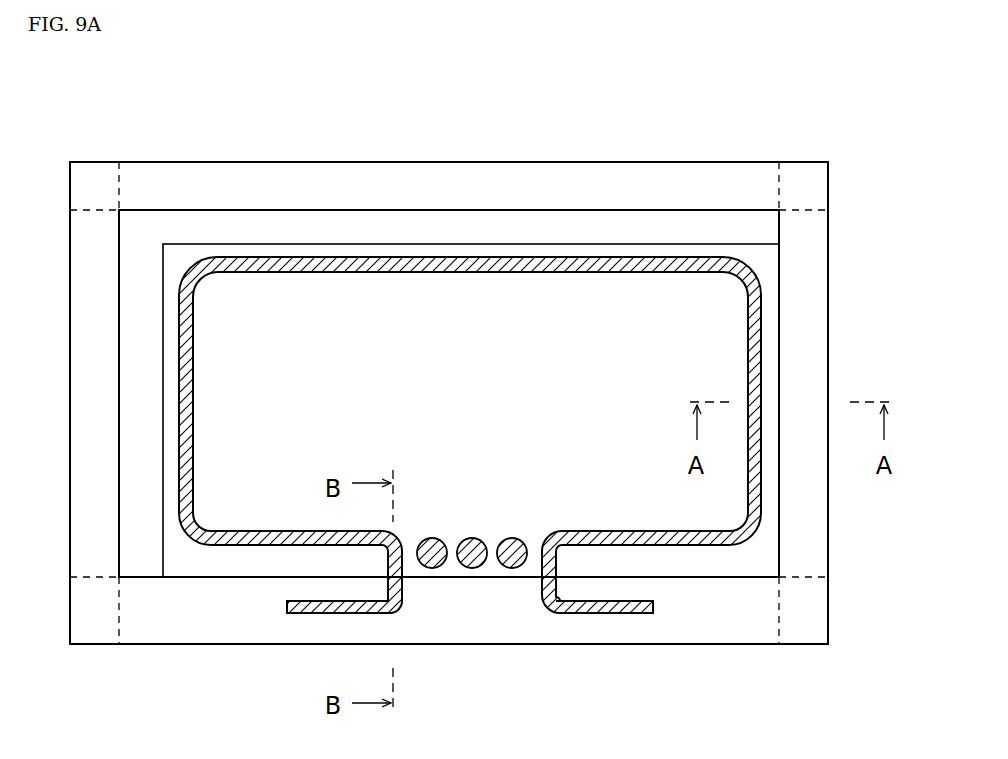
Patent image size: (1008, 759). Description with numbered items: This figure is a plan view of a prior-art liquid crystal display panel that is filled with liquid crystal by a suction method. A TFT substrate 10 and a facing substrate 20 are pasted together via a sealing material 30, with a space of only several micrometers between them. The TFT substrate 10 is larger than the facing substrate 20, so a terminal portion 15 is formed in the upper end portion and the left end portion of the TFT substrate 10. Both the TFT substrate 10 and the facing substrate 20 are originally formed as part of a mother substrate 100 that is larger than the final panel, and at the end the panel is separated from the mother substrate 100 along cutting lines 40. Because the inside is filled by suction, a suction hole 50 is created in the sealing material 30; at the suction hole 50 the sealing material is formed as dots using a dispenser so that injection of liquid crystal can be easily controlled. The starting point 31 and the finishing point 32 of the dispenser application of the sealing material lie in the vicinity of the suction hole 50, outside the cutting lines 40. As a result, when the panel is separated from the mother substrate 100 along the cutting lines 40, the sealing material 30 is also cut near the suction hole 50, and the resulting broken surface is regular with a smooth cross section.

The mother substrate 100 is at (225, 162).
The TFT substrate 10 is at (470, 210).
The terminal portion 15 is at (573, 224).
The facing substrate 20 is at (665, 244).
The sealing material 30 is at (762, 339).
The starting point 31 is at (284, 607).
The finishing point 32 is at (655, 607).
The cutting lines 40 is at (779, 520).
The suction hole 50 is at (411, 558).